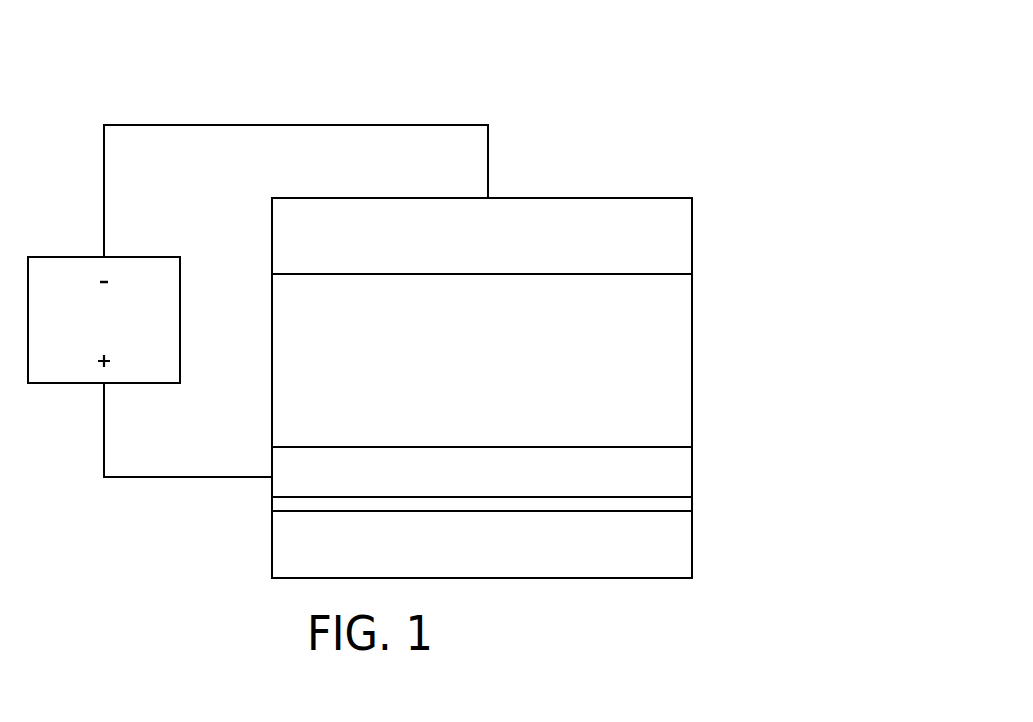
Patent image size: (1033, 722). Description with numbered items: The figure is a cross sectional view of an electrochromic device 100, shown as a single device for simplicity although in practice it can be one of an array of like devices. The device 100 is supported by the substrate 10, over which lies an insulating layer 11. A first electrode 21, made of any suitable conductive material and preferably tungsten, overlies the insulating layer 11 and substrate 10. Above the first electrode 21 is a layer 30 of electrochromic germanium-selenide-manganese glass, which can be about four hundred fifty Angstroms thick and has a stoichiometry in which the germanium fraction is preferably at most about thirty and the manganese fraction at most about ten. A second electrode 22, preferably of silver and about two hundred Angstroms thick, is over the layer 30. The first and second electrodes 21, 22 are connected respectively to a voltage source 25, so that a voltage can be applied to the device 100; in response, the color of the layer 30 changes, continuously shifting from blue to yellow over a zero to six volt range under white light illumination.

The electrochromic device 100 is at (648, 80).
The voltage source 25 is at (181, 318).
The second electrode 22 is at (607, 252).
The layer of germanium-selenide-manganese glass 30 is at (607, 372).
The first electrode 21 is at (607, 489).
The insulating layer 11 is at (684, 504).
The substrate 10 is at (607, 567).